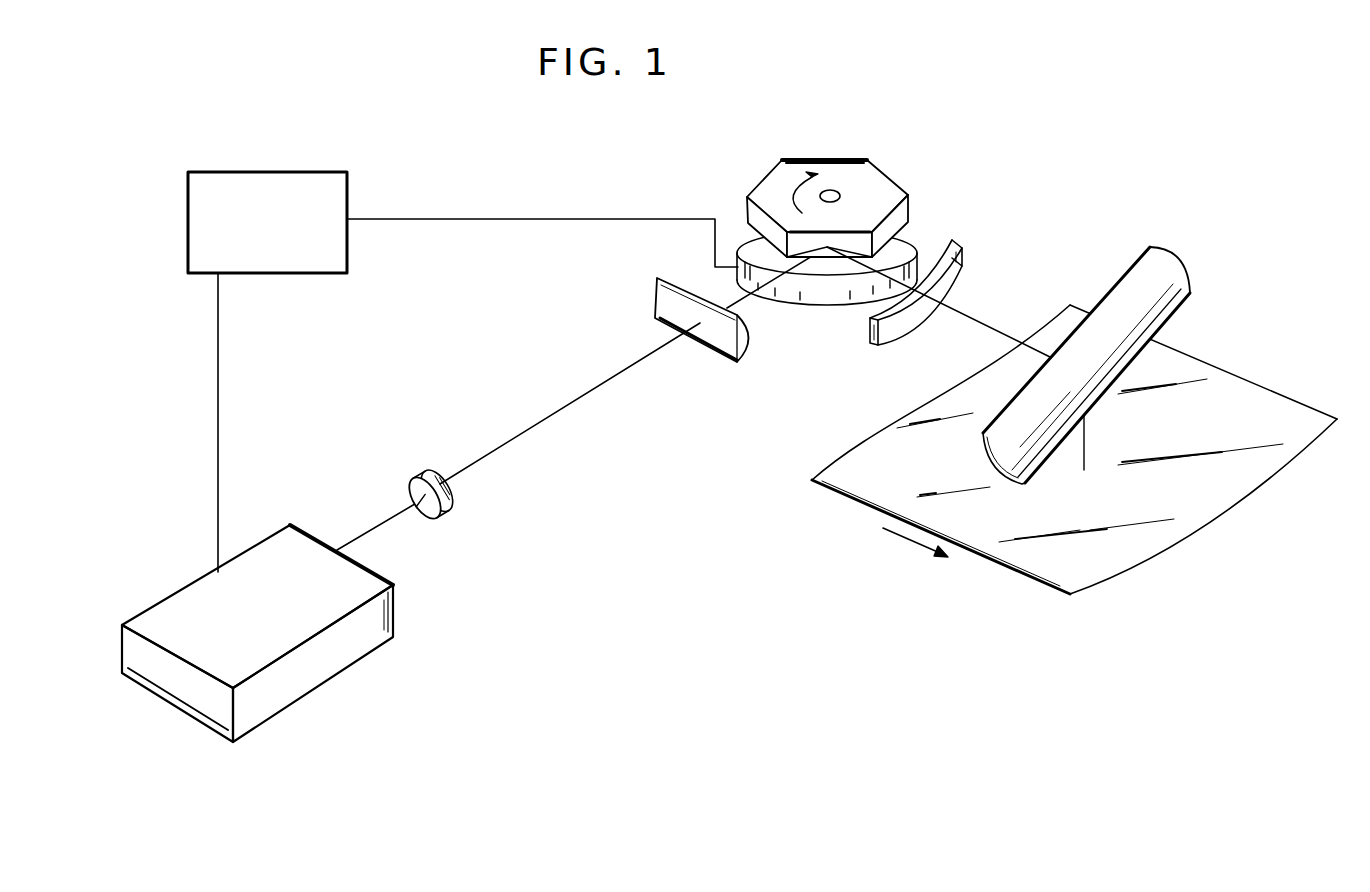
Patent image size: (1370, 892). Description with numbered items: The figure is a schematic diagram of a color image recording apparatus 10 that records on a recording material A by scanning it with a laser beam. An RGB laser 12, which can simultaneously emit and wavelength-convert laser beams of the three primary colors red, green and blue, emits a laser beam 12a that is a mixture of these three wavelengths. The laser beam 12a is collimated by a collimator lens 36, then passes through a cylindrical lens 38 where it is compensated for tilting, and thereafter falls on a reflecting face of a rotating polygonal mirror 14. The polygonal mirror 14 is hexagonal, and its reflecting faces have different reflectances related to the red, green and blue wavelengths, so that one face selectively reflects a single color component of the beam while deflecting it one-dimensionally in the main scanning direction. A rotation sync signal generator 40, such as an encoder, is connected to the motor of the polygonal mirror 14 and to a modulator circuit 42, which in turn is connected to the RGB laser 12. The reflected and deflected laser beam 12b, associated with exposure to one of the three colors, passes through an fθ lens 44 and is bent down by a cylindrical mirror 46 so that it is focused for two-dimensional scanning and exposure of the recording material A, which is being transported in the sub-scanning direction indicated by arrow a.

The color image recording apparatus 10 is at (690, 545).
The RGB laser 12 is at (347, 653).
The laser beam 12a is at (593, 390).
The laser beam 12b is at (980, 323).
The rotating polygonal mirror 14 is at (778, 172).
The collimator lens 36 is at (447, 512).
The cylindrical lens 38 is at (662, 293).
The rotation sync signal generator 40 is at (827, 297).
The modulator circuit 42 is at (283, 182).
The fθ lens 44 is at (943, 250).
The cylindrical mirror 46 is at (1170, 262).
The recording material A is at (1030, 553).
The arrow a is at (915, 550).